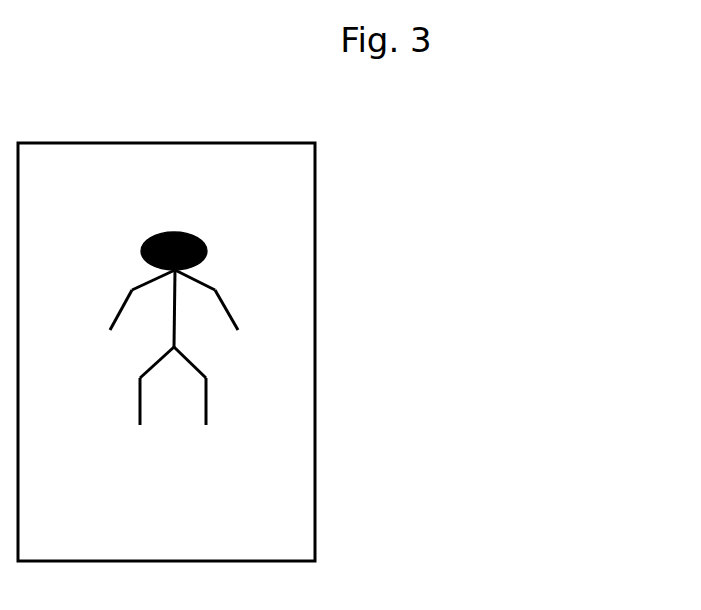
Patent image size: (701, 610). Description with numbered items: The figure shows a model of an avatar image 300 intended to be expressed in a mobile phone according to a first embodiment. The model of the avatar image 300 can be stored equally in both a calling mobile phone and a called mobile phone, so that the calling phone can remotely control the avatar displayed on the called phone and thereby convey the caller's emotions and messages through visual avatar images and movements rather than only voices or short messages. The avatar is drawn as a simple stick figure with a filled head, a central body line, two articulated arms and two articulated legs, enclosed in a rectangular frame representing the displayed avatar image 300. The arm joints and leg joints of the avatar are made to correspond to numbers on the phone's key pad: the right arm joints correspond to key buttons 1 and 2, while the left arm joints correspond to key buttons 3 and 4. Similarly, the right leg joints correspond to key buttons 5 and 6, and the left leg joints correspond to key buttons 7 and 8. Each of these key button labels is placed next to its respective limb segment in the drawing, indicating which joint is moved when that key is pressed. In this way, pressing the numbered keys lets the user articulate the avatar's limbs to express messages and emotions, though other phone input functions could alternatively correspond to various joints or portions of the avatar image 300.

The avatar image 300 is at (315, 265).
The key button 1 is at (143, 276).
The key button 2 is at (111, 315).
The key button 3 is at (204, 276).
The key button 4 is at (236, 315).
The key button 5 is at (152, 362).
The key button 6 is at (138, 417).
The key button 7 is at (194, 362).
The key button 8 is at (207, 417).